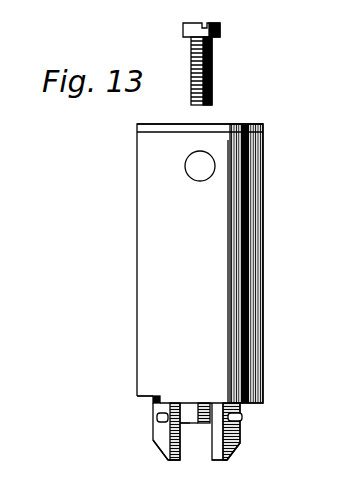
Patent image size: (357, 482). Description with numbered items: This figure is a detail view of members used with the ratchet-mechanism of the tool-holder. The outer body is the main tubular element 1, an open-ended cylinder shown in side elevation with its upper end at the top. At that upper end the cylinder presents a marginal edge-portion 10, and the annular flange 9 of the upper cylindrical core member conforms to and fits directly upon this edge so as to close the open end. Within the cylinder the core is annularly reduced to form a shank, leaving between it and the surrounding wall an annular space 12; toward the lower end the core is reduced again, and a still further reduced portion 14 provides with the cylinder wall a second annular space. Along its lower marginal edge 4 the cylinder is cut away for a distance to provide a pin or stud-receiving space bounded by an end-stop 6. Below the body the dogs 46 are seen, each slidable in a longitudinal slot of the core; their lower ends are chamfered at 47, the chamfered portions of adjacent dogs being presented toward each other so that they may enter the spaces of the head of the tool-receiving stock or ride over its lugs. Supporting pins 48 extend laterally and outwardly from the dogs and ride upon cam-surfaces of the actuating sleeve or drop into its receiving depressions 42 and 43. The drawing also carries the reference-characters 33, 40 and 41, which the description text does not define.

The main tubular element 1 is at (250, 363).
The lower marginal edge 4 is at (142, 398).
The end-stop 6 is at (160, 401).
The annular flange 9 is at (137, 123).
The marginal edge-portion 10 is at (137, 132).
The annular space 12 is at (200, 180).
The reduced portion 14 is at (206, 403).
The screw 33 is at (220, 31).
The jaw 40 is at (221, 471).
The jaw part 41 is at (187, 452).
The receiving depression 42 is at (165, 471).
The receiving depression 43 is at (245, 471).
The dog 46 is at (157, 430).
The chamfered portion 47 is at (163, 444).
The supporting pin 48 is at (155, 419).